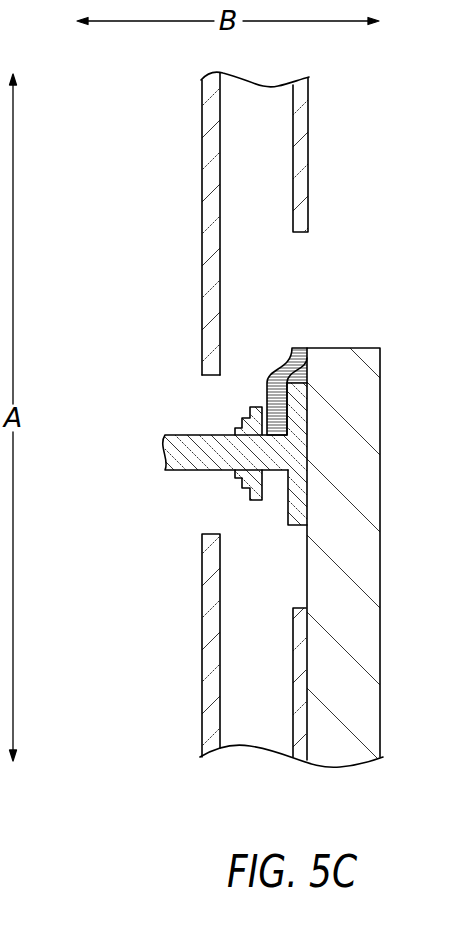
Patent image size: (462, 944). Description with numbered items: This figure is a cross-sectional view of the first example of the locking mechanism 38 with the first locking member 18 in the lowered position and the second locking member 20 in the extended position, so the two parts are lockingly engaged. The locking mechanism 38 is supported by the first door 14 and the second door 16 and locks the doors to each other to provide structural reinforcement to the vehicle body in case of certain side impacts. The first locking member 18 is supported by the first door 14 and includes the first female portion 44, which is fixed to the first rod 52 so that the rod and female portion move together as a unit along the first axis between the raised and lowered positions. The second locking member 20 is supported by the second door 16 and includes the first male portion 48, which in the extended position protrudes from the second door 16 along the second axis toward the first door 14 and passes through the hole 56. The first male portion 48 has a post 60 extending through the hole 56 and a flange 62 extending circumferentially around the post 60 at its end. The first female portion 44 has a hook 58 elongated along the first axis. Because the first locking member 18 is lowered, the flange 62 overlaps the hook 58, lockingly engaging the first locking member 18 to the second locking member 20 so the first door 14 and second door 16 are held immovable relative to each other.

The first door 14 is at (309, 160).
The second door 16 is at (202, 210).
The first locking member 18 is at (385, 381).
The second locking member 20 is at (186, 369).
The locking mechanism 38 is at (156, 109).
The first female portion 44 is at (277, 355).
The first male portion 48 is at (177, 433).
The first rod 52 is at (355, 562).
The hole 56 is at (211, 377).
The hook 58 is at (283, 411).
The post 60 is at (183, 473).
The flange 62 is at (297, 515).